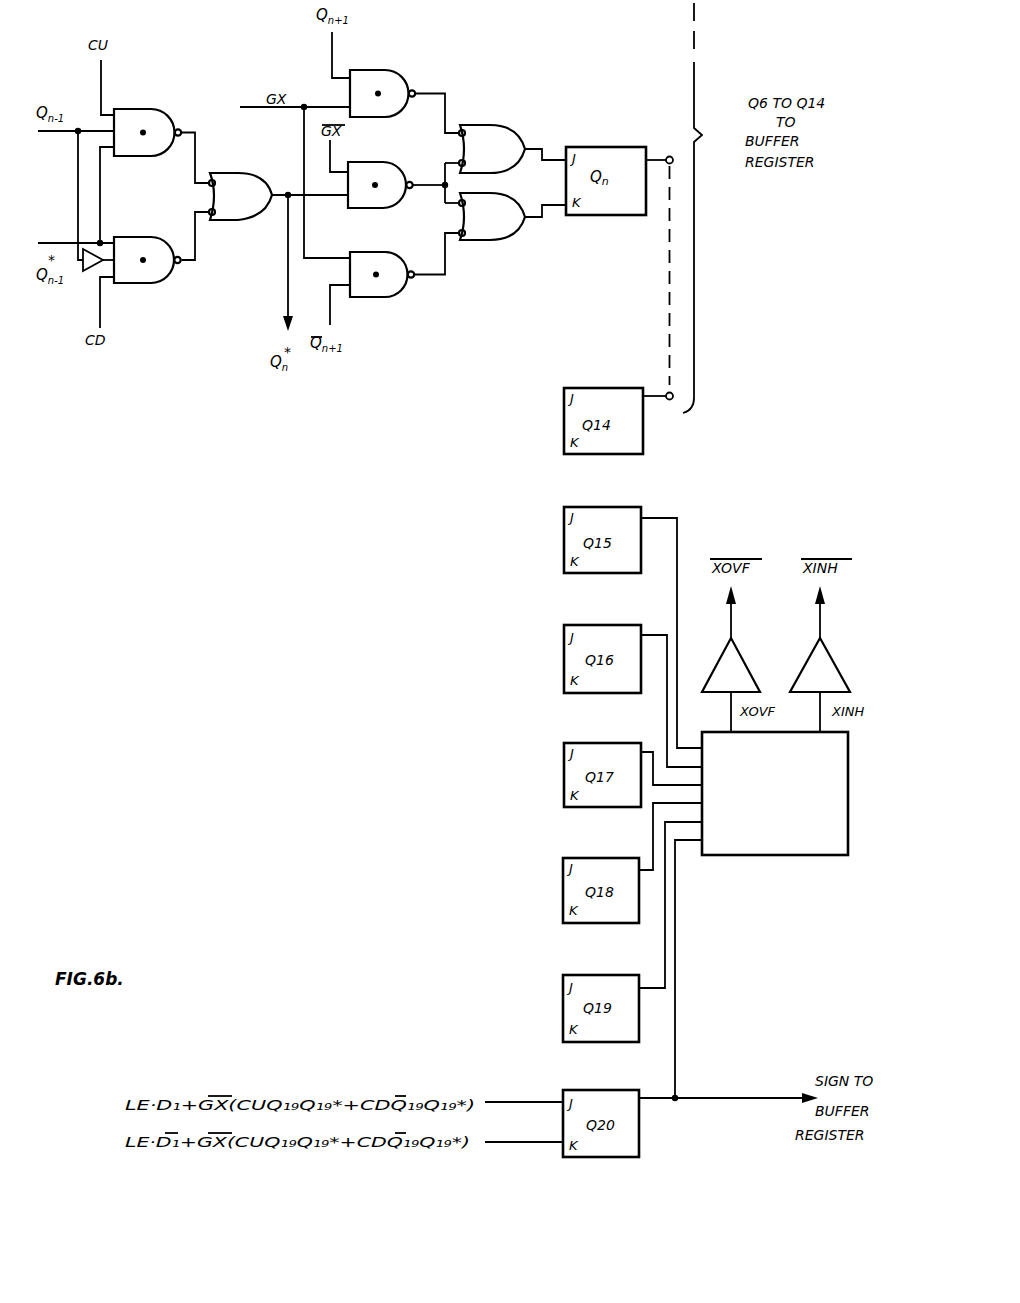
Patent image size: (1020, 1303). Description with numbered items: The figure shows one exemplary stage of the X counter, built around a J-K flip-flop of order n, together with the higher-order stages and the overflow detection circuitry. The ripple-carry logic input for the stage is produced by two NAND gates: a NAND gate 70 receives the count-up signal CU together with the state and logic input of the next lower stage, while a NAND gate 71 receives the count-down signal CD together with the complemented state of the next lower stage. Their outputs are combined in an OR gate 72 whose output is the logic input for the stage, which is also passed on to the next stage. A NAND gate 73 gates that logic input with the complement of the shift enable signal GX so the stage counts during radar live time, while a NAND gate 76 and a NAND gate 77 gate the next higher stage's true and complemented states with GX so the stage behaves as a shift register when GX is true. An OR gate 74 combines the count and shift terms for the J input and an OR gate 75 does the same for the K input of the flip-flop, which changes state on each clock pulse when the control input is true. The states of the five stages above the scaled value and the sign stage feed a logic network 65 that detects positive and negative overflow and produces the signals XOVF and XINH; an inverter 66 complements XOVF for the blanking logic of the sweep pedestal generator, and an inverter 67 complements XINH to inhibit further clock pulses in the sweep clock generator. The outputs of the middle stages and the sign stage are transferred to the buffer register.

The logic network 65 is at (843, 757).
The inverter 66 is at (737, 656).
The inverter 67 is at (825, 656).
The NAND gate 70 is at (152, 114).
The NAND gate 71 is at (147, 278).
The OR gate 72 is at (243, 212).
The NAND gate 73 is at (383, 164).
The OR gate 74 is at (509, 130).
The OR gate 75 is at (502, 238).
The NAND gate 76 is at (390, 72).
The NAND gate 77 is at (383, 254).